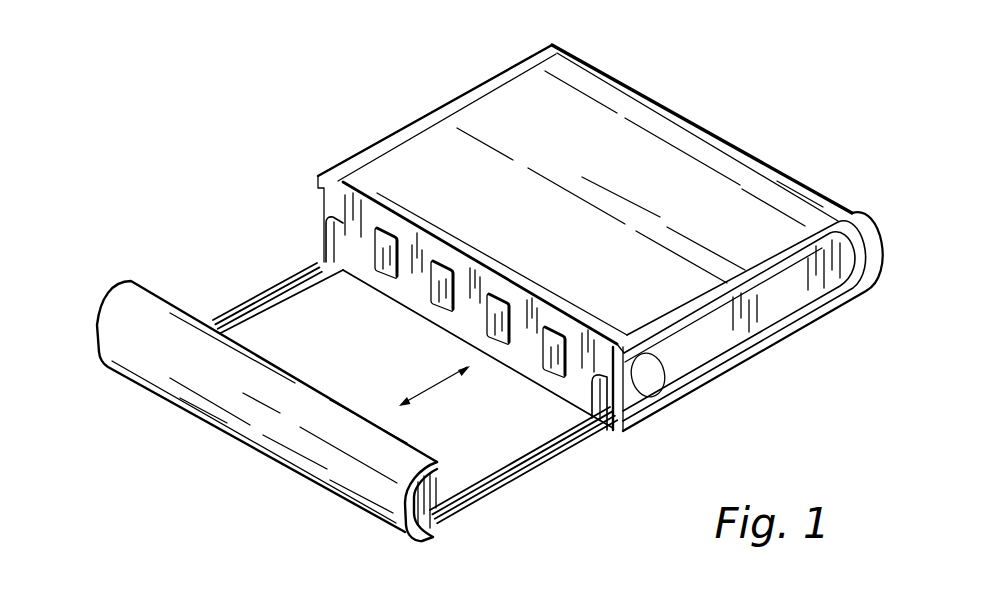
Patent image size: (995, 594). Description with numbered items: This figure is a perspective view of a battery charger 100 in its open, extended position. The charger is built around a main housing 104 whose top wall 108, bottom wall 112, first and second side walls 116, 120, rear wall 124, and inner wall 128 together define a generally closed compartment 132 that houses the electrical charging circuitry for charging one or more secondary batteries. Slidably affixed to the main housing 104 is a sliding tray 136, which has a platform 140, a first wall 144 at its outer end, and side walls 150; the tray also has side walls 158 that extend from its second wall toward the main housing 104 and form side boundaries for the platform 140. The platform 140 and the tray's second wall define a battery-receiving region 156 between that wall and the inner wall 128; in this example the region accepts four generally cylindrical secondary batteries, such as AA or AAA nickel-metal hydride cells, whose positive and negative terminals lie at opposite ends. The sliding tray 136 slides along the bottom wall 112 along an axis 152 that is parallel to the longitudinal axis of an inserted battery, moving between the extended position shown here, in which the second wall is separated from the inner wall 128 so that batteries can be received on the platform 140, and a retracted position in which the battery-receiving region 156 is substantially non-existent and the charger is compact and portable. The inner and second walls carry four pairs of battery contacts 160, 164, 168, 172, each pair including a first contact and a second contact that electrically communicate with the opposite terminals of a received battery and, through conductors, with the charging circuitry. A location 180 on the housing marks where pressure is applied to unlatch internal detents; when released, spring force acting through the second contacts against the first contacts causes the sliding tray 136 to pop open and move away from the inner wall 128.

The battery charger 100 is at (203, 127).
The main housing 104 is at (354, 142).
The top wall 108 is at (644, 182).
The bottom wall 112 is at (803, 330).
The first side wall 116 is at (722, 331).
The second side wall 120 is at (507, 69).
The rear wall 124 is at (741, 146).
The inner wall 128 is at (332, 207).
The compartment 132 is at (455, 148).
The sliding tray 136 is at (562, 448).
The platform 140 is at (328, 342).
The first wall 144 is at (222, 392).
The side walls 150 is at (108, 300).
The axis 152 is at (428, 388).
The battery-receiving region 156 is at (307, 293).
The side walls 158 is at (442, 505).
The battery contacts 160 is at (393, 238).
The battery contacts 164 is at (449, 271).
The battery contacts 168 is at (505, 304).
The battery contacts 172 is at (561, 337).
The pressure location 180 is at (651, 379).